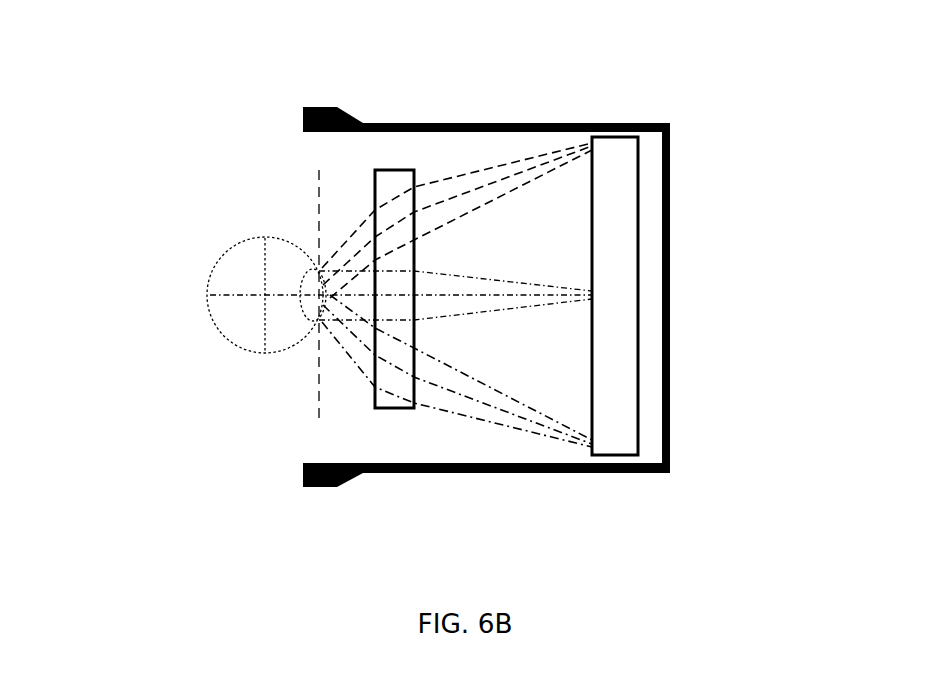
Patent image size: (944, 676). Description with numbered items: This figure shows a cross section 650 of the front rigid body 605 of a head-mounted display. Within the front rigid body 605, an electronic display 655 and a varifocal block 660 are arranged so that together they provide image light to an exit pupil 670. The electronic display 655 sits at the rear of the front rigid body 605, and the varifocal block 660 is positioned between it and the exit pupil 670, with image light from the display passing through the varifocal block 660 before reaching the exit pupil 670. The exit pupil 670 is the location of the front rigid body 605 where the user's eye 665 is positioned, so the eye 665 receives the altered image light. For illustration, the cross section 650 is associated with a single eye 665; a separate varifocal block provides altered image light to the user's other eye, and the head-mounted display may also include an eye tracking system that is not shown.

The cross section 650 is at (113, 46).
The front rigid body 605 is at (637, 123).
The electronic display 655 is at (642, 162).
The varifocal block 660 is at (375, 185).
The eye 665 is at (233, 248).
The exit pupil 670 is at (318, 408).